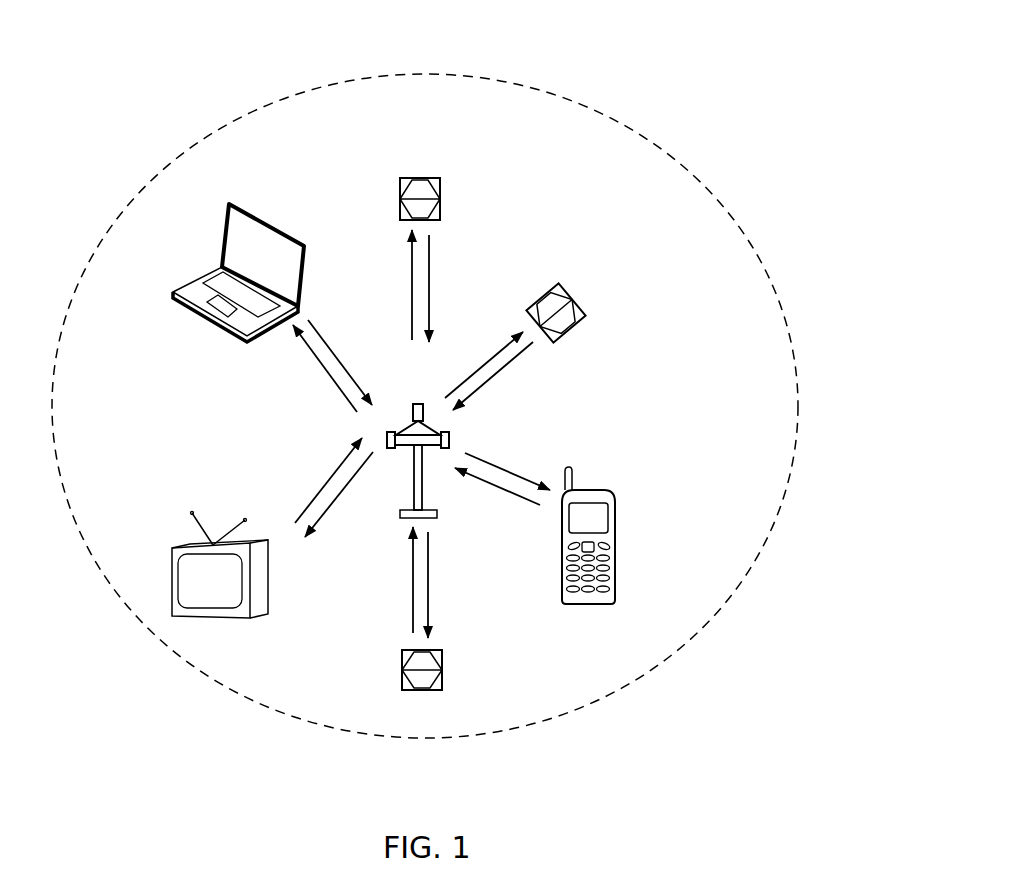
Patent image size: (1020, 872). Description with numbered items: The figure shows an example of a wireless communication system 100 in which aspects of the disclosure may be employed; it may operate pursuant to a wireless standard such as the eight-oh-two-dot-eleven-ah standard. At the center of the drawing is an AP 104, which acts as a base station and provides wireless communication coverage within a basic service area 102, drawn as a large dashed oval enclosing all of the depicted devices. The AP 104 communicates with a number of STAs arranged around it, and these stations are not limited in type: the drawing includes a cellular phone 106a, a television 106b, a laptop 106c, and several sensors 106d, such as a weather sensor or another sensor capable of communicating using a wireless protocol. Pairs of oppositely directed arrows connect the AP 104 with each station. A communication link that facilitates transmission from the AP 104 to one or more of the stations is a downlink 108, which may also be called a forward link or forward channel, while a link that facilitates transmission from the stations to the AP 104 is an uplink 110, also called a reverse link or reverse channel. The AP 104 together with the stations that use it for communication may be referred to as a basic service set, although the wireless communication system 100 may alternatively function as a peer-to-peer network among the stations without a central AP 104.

The wireless communication system 100 is at (670, 52).
The basic service area 102 is at (746, 232).
The AP 104 is at (417, 403).
The cellular phone 106a is at (593, 486).
The television 106b is at (262, 540).
The laptop 106c is at (233, 203).
The sensors 106d is at (442, 199).
The downlink 108 is at (495, 455).
The uplink 110 is at (455, 487).